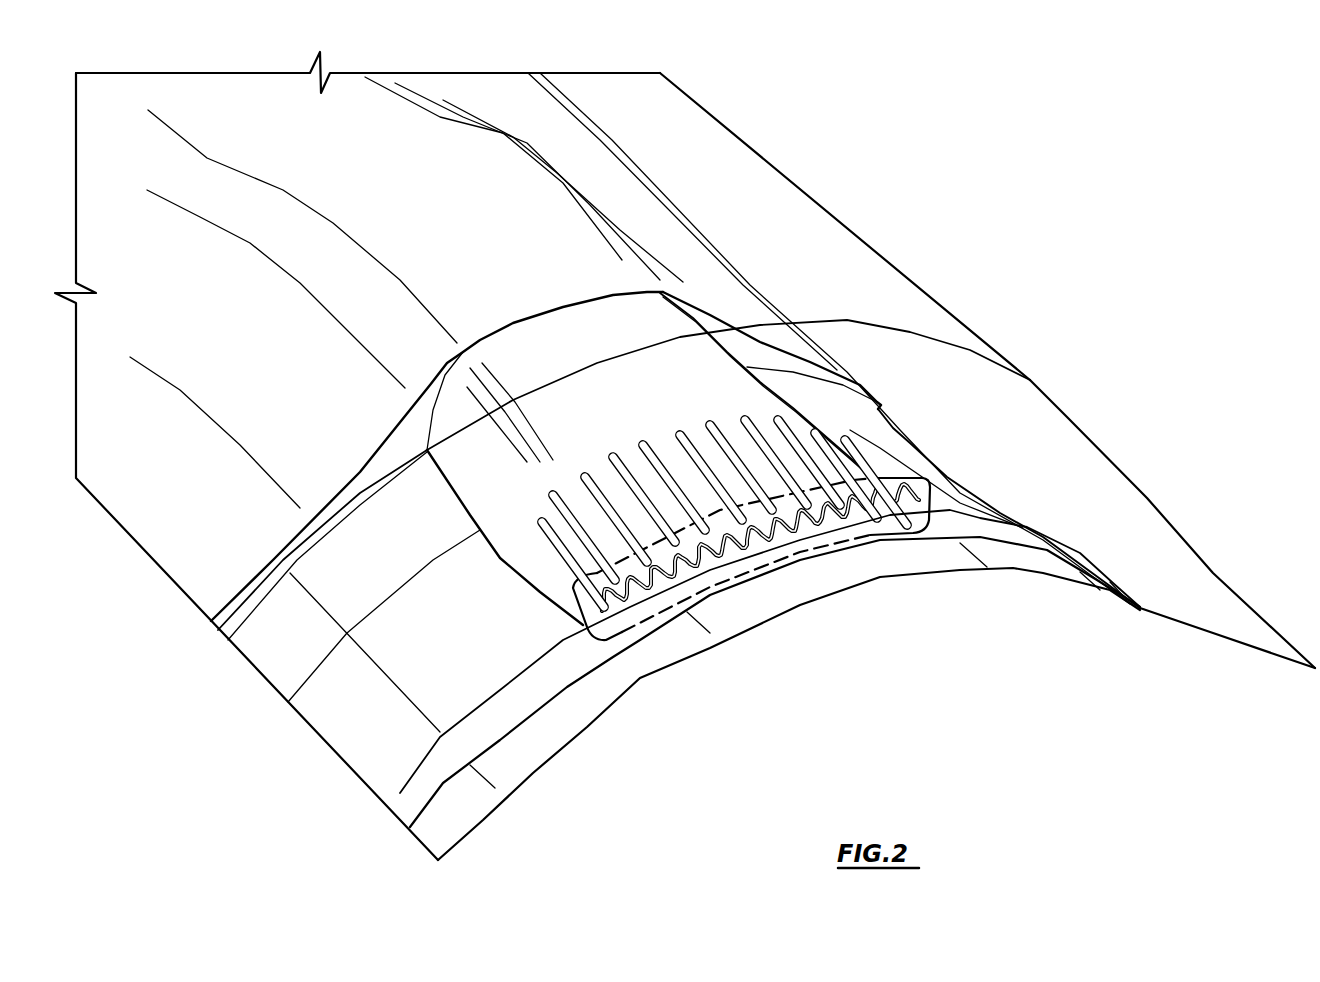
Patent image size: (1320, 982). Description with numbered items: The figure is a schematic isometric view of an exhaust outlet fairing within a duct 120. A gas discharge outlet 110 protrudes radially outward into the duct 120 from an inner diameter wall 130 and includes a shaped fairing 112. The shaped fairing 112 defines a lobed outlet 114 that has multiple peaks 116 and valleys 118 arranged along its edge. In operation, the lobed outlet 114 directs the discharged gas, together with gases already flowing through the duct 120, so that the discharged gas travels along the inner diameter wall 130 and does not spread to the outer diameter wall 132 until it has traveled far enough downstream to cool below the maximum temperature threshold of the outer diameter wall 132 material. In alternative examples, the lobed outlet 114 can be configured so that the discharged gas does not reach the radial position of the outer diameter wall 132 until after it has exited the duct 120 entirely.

The gas discharge outlet 110 is at (712, 366).
The shaped fairing 112 is at (824, 464).
The lobed outlet 114 is at (935, 497).
The peaks 116 is at (965, 478).
The valleys 118 is at (957, 540).
The duct 120 is at (975, 380).
The inner diameter wall 130 is at (224, 555).
The outer diameter wall 132 is at (772, 164).